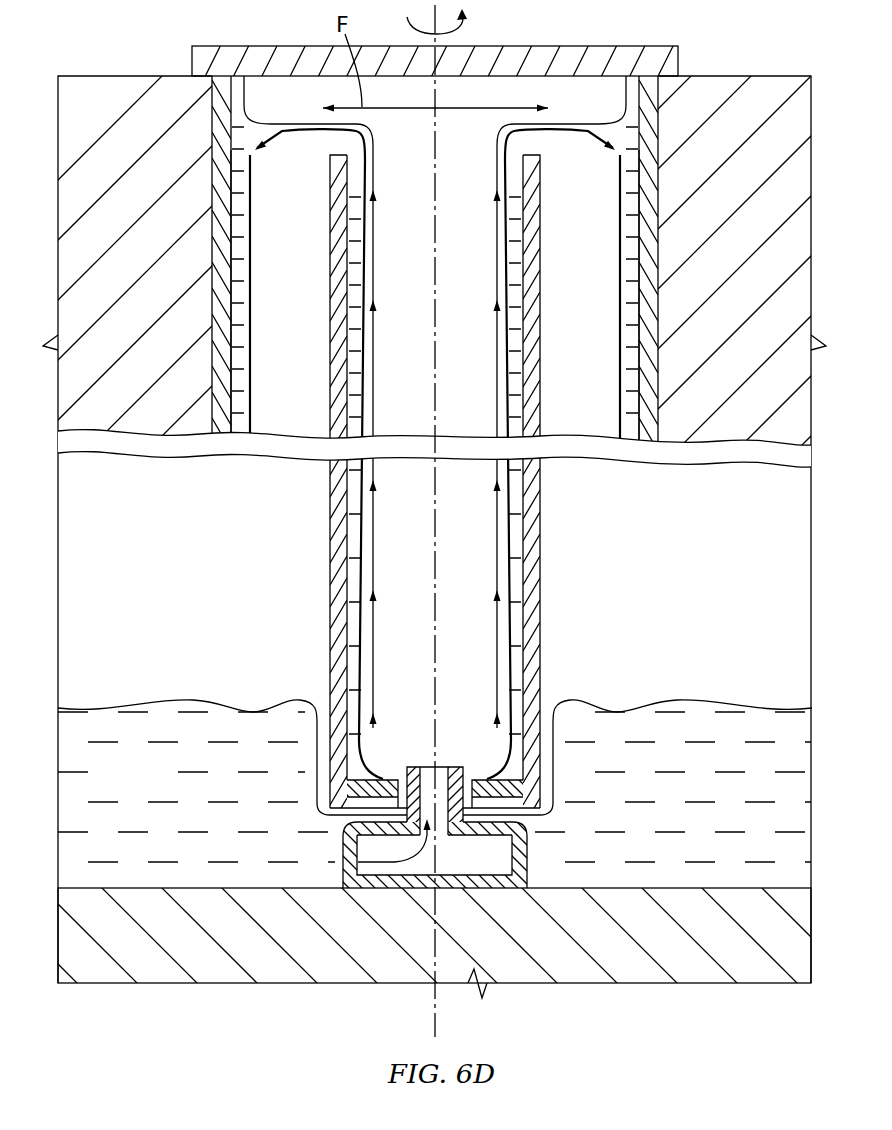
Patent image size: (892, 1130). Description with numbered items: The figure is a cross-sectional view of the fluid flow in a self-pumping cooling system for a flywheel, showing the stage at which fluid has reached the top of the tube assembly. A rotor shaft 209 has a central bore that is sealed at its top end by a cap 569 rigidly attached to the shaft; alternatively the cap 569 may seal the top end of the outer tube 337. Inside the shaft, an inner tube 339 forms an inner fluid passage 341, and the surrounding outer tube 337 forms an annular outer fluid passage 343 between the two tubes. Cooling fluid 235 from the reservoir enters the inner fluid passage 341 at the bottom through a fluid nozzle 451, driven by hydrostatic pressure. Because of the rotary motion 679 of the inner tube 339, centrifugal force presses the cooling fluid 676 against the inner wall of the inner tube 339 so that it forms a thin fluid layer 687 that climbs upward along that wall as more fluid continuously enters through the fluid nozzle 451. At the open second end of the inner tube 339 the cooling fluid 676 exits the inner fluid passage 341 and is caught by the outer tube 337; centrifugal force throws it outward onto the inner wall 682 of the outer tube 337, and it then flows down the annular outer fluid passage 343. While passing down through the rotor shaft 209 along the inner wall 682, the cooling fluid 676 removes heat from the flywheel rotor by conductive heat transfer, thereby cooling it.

The rotor shaft 209 is at (756, 133).
The cap 569 is at (213, 57).
The rotary motion 679 is at (466, 30).
The outer tube 337 is at (212, 167).
The inner tube 339 is at (333, 196).
The inner fluid passage 341 is at (492, 307).
The outer fluid passage 343 is at (282, 230).
The cooling fluid 676 is at (226, 322).
The inner wall of the outer tube 682 is at (234, 344).
The fluid layer 687 is at (243, 372).
The cooling fluid 235 is at (151, 790).
The fluid nozzle 451 is at (540, 854).